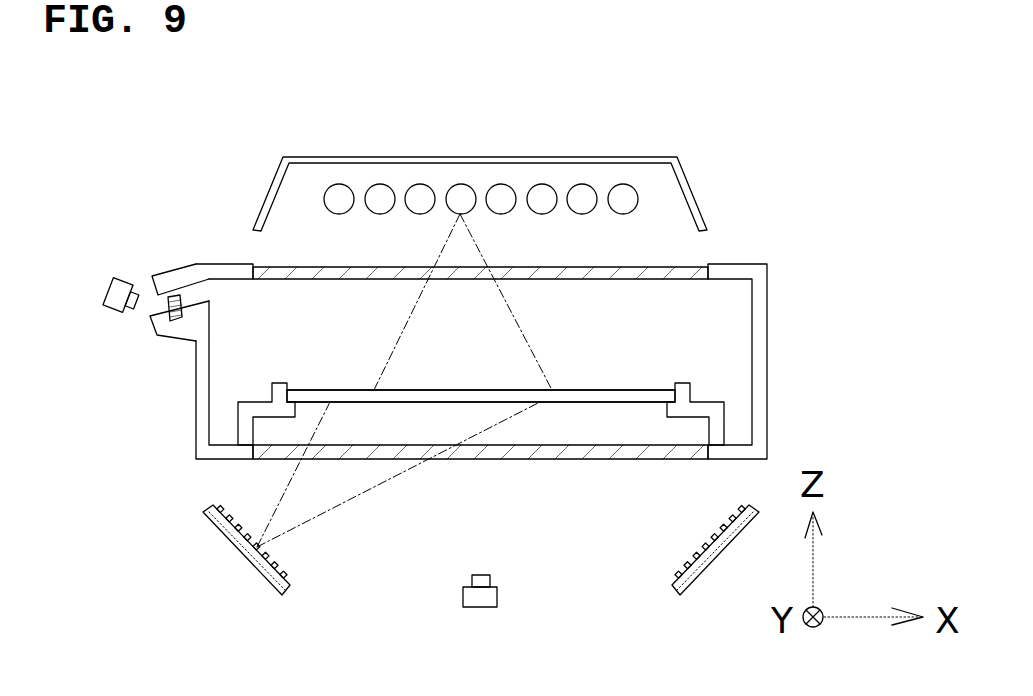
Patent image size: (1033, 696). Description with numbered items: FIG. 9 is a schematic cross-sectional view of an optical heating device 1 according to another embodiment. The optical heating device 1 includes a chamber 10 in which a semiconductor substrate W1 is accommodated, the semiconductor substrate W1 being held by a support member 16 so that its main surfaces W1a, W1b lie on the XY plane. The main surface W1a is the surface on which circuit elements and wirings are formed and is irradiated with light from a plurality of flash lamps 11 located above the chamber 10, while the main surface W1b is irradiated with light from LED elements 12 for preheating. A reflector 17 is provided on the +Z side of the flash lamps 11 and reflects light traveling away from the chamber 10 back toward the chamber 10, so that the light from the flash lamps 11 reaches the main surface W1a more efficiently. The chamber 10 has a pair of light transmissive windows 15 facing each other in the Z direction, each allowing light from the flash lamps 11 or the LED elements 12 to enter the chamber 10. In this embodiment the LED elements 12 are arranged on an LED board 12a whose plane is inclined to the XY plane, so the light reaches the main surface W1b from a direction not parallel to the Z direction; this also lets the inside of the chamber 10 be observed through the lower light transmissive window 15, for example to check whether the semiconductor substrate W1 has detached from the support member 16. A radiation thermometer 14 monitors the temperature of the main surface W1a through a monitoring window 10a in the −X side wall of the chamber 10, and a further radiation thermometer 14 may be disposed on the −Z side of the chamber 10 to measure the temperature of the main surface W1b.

The optical heating device 1 is at (133, 152).
The chamber 10 is at (162, 458).
The monitoring window 10a is at (173, 322).
The flash lamps 11 is at (330, 183).
The LED elements 12 is at (250, 561).
The LED board 12a is at (273, 590).
The radiation thermometer 14 is at (118, 286).
The light transmissive windows 15 is at (643, 267).
The support member 16 is at (688, 408).
The reflector 17 is at (262, 205).
The semiconductor substrate W1 is at (642, 398).
The main surface W1a is at (653, 388).
The main surface W1b is at (480, 403).